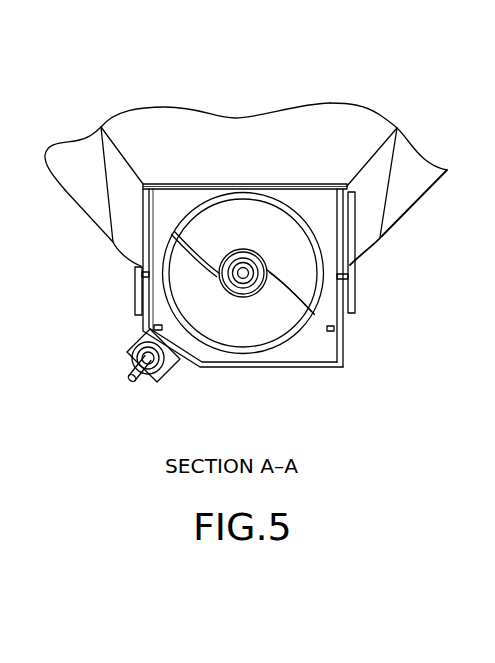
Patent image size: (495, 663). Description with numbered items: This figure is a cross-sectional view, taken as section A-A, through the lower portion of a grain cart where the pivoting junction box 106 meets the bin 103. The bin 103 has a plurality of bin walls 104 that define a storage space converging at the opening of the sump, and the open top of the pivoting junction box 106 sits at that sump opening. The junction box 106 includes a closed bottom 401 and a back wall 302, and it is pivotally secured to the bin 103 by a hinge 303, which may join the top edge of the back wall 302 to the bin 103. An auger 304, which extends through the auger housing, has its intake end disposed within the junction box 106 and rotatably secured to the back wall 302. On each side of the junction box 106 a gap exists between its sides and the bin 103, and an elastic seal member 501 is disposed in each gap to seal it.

The bin 103 is at (123, 118).
The bin walls 104 is at (375, 124).
The pivoting junction box 106 is at (343, 338).
The back wall 302 is at (324, 215).
The hinge 303 is at (211, 183).
The auger 304 is at (278, 322).
The closed bottom 401 is at (287, 362).
The elastic seal member 501 is at (348, 277).